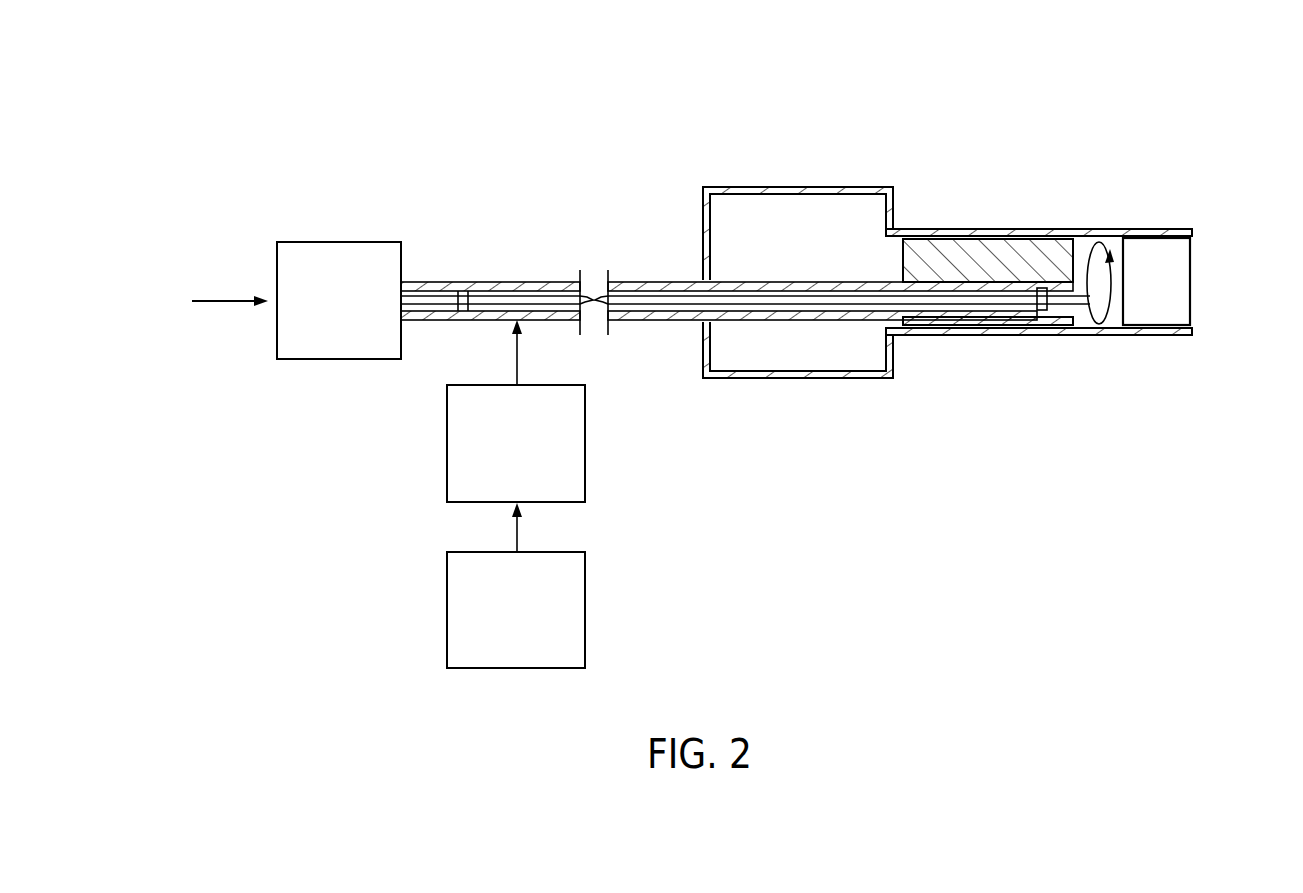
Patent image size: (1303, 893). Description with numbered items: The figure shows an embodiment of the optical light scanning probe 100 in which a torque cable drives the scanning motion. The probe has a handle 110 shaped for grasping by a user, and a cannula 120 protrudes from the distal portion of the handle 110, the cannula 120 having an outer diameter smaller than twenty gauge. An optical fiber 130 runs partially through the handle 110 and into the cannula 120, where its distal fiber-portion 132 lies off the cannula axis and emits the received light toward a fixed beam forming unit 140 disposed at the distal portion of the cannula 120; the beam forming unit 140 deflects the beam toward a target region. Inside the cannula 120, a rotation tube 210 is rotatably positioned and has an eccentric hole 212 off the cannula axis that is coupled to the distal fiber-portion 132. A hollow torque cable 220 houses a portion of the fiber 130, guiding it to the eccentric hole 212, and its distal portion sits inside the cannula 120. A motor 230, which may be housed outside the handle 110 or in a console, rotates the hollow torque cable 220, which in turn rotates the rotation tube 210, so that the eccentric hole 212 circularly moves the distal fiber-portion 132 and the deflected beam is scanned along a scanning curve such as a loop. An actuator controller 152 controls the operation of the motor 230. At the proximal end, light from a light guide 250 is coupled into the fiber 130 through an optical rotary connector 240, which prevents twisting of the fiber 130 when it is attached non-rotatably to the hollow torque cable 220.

The scanning probe 100 is at (591, 128).
The handle 110 is at (790, 188).
The cannula 120 is at (938, 229).
The optical fiber 130 is at (820, 303).
The distal fiber-portion 132 is at (1082, 303).
The beam forming unit 140 is at (1153, 238).
The actuator controller 152 is at (585, 598).
The rotation tube 210 is at (965, 229).
The eccentric hole 212 is at (1065, 307).
The hollow torque cable 220 is at (441, 282).
The motor 230 is at (585, 448).
The optical rotary connector 240 is at (313, 242).
The light guide 250 is at (217, 302).